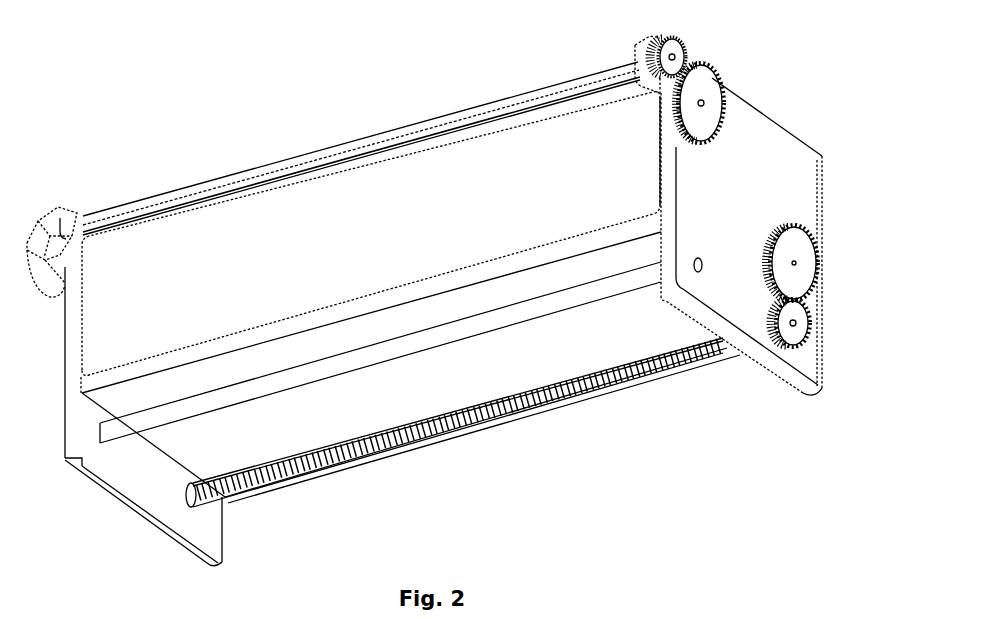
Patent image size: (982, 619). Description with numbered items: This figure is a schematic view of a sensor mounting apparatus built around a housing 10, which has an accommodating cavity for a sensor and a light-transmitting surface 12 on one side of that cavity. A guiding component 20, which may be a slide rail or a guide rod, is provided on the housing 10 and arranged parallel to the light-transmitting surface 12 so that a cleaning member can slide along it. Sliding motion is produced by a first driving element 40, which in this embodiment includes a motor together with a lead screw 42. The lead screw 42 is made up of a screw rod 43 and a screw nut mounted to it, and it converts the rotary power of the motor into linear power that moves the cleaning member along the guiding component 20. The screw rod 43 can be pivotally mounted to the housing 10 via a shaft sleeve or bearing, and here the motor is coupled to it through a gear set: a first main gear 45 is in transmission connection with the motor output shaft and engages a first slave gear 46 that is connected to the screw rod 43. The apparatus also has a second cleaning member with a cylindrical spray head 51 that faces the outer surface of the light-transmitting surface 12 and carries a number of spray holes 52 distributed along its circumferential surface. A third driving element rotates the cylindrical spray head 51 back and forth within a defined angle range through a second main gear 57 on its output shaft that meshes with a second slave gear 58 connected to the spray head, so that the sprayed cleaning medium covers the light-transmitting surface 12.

The housing 10 is at (812, 150).
The light-transmitting surface 12 is at (97, 323).
The guiding component 20 is at (394, 354).
The first driving element 40 is at (835, 307).
The lead screw 42 is at (350, 467).
The screw rod 43 is at (454, 439).
The first main gear 45 is at (798, 257).
The first slave gear 46 is at (804, 318).
The cylindrical spray head 51 is at (352, 155).
The spray holes 52 is at (243, 188).
The second main gear 57 is at (710, 94).
The second slave gear 58 is at (668, 46).